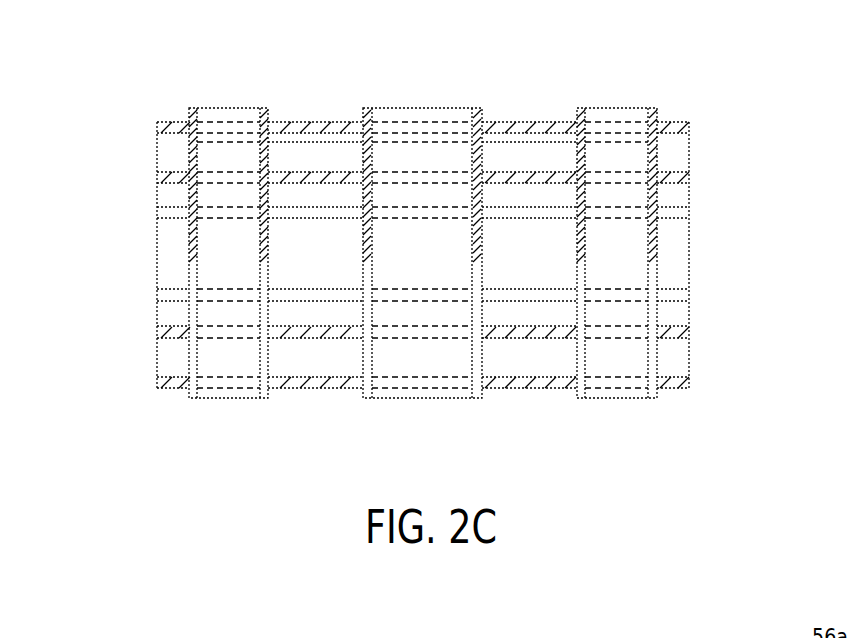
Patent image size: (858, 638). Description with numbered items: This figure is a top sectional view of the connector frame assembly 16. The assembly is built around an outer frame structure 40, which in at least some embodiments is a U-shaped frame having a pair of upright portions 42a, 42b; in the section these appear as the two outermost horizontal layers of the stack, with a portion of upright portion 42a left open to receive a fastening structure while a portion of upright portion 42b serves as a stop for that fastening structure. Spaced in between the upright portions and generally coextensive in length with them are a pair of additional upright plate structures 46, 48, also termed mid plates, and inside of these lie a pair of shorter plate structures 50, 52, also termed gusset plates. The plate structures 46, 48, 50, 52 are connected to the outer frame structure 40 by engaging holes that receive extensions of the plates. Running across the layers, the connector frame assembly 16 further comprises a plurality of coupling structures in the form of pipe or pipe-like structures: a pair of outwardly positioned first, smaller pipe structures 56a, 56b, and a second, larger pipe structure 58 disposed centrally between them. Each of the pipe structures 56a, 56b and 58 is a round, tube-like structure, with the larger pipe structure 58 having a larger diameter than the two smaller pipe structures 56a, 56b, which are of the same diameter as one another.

The connector frame assembly 16 is at (490, 235).
The outer frame structure 40 is at (689, 253).
The upright portion 42a is at (684, 382).
The upright portion 42b is at (679, 122).
The upright plate structure 46 is at (689, 335).
The upright plate structure 48 is at (690, 178).
The shorter plate structure 50 is at (689, 294).
The shorter plate structure 52 is at (689, 214).
The first pipe structure 56a is at (266, 111).
The first pipe structure 56b is at (651, 110).
The second pipe structure 58 is at (479, 111).